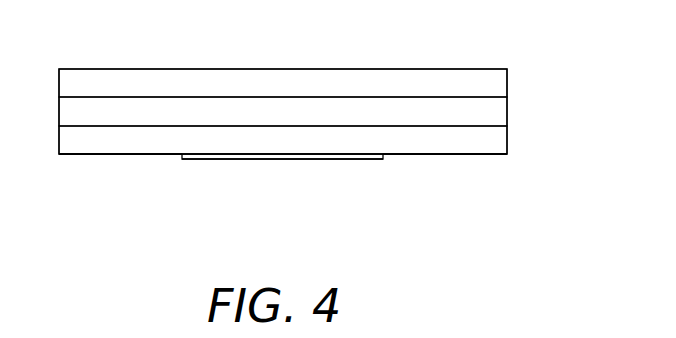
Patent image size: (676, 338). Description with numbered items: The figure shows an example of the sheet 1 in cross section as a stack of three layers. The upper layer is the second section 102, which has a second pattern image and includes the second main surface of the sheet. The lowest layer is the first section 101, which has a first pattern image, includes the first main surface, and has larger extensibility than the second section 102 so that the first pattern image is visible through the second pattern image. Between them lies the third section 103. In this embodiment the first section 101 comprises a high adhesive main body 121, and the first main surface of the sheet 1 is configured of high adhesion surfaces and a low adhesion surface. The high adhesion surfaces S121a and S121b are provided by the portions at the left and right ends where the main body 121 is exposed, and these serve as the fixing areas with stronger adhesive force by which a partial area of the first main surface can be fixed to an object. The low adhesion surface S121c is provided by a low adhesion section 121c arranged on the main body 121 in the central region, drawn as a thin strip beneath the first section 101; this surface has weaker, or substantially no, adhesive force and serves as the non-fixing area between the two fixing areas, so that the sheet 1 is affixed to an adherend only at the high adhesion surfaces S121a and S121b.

The sheet 1 is at (335, 62).
The second section 102 is at (512, 70).
The third section 103 is at (512, 98).
The first section 101 is at (512, 127).
The main body 121 is at (155, 140).
The low adhesion section 121c is at (345, 159).
The high adhesion surface S121a is at (105, 154).
The low adhesion surface S121c is at (260, 159).
The high adhesion surface S121b is at (458, 154).